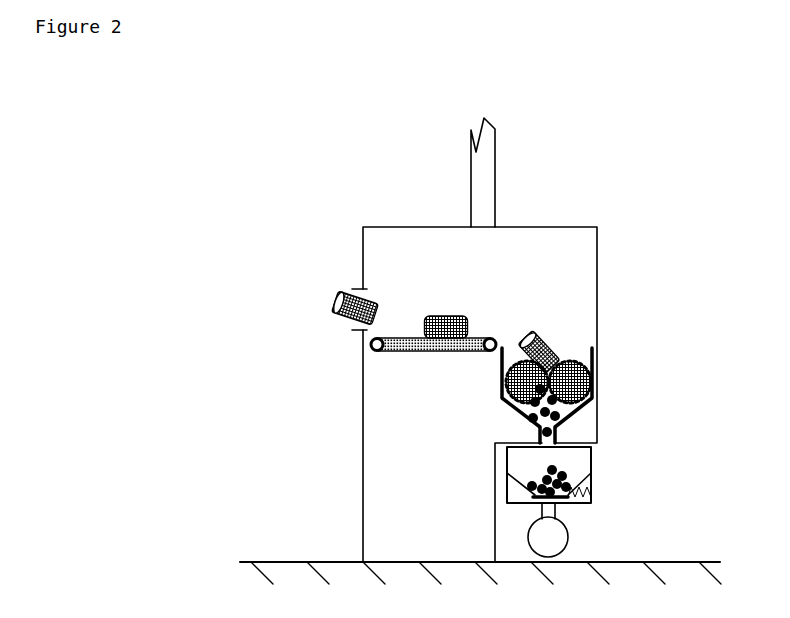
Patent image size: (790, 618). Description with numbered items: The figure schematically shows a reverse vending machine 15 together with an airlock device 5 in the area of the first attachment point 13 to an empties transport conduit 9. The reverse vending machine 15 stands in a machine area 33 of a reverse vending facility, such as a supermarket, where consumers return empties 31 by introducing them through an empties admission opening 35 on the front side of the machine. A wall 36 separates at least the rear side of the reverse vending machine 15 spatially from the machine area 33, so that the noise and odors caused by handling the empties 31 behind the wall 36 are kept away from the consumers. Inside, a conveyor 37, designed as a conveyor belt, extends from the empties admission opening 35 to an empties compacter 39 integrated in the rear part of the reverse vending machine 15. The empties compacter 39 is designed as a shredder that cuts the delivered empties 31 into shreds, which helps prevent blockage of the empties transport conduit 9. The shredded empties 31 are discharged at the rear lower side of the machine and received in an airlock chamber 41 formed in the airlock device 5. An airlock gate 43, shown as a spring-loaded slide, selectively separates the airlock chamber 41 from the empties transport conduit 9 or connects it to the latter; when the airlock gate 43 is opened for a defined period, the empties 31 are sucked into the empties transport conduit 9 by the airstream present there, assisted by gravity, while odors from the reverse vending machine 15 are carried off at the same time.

The airlock device 5 is at (592, 492).
The empties transport conduit 9 is at (570, 537).
The first attachment point 13 is at (527, 518).
The reverse vending machine 15 is at (377, 225).
The empties 31 is at (332, 304).
The machine area 33 is at (183, 266).
The empties admission opening 35 is at (350, 327).
The wall 36 is at (495, 190).
The conveyor 37 is at (420, 355).
The empties compacter 39 is at (570, 423).
The airlock chamber 41 is at (570, 462).
The airlock gate 43 is at (540, 498).